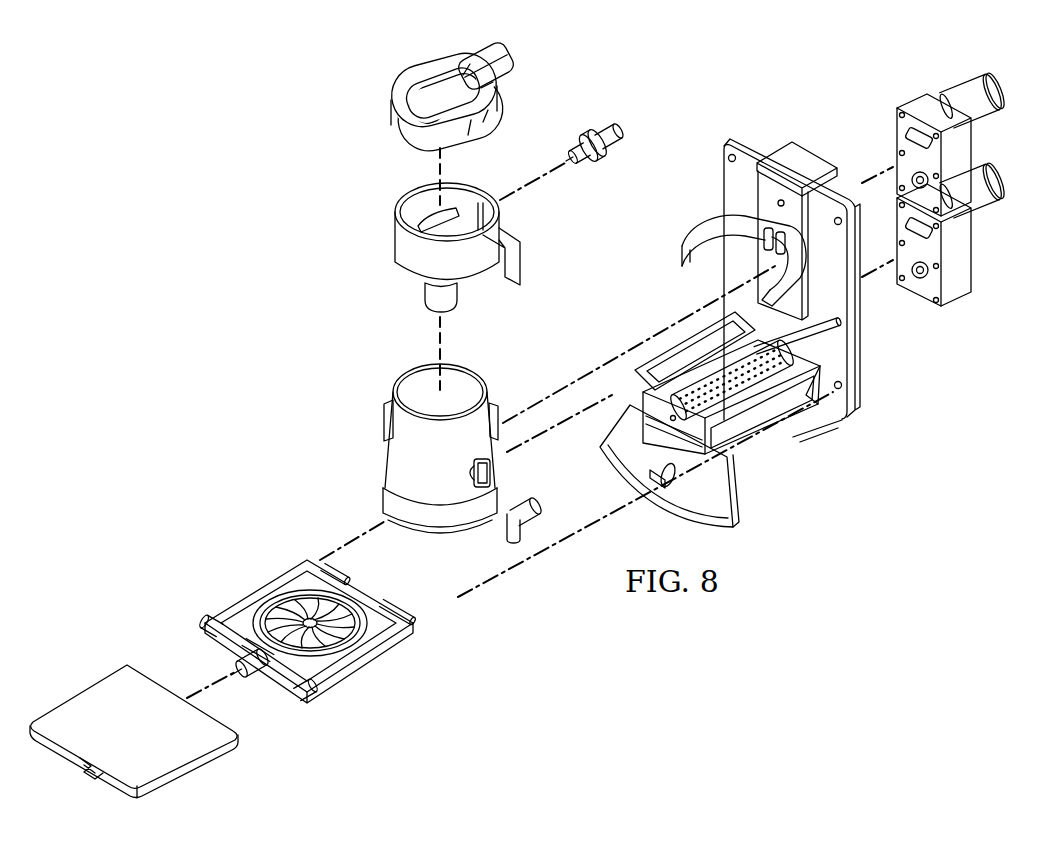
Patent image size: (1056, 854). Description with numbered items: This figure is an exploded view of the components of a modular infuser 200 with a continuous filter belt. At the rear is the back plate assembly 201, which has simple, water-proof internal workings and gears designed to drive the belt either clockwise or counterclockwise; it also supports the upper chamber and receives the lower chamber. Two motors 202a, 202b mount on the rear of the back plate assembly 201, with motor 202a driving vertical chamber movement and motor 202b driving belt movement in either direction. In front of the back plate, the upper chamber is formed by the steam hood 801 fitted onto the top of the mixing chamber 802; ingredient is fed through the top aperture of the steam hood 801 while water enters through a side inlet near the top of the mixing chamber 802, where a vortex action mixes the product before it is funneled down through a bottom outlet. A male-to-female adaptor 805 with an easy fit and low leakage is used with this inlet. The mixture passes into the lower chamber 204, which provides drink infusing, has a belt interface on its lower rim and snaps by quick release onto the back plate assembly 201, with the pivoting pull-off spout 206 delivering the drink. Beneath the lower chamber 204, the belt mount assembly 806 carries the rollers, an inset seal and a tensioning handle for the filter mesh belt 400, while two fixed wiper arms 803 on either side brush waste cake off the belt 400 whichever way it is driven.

The modular infuser 200 is at (172, 219).
The back plate assembly 201 is at (742, 138).
The motor 202a is at (985, 80).
The motor 202b is at (985, 170).
The lower chamber 204 is at (388, 458).
The pull-off spout 206 is at (507, 532).
The filter mesh belt 400 is at (77, 695).
The steam hood 801 is at (391, 104).
The mixing chamber 802 is at (395, 236).
The fixed wiper arms 803 is at (793, 436).
The male-to-female adaptor 805 is at (612, 123).
The belt mount assembly 806 is at (253, 590).